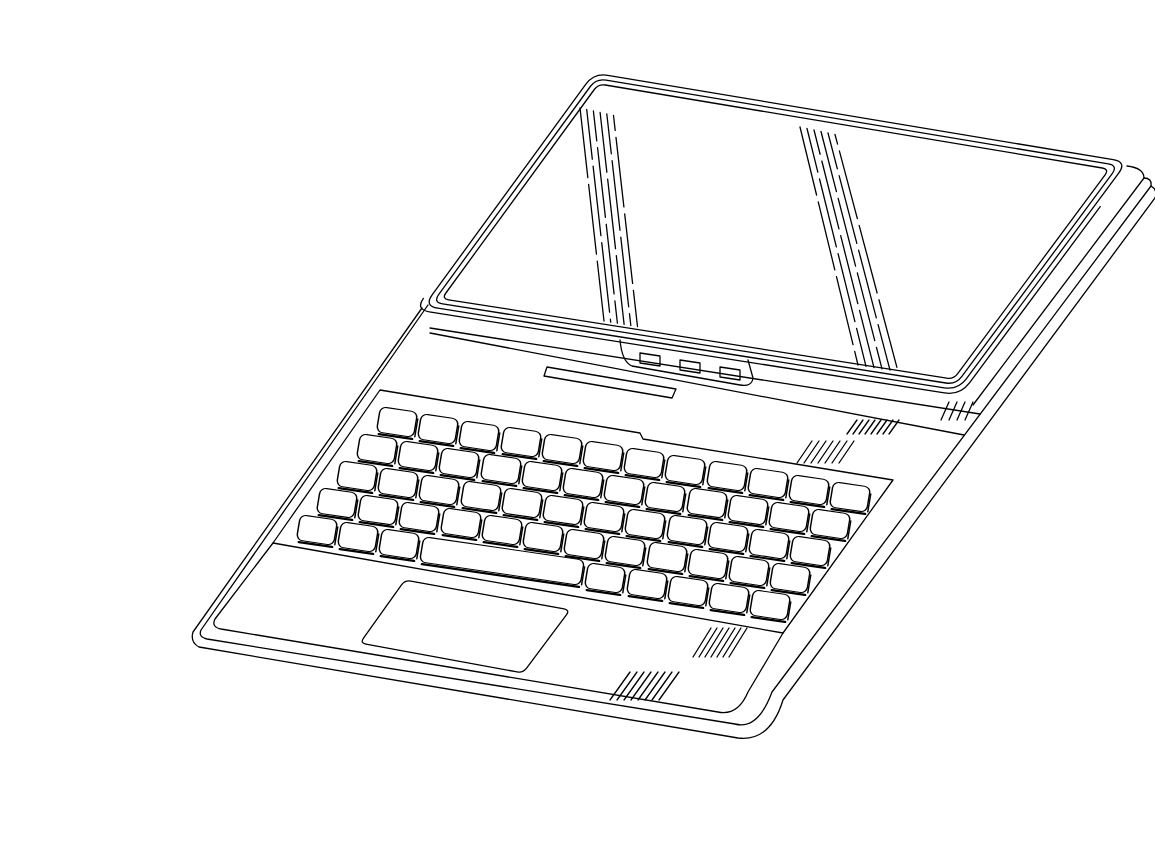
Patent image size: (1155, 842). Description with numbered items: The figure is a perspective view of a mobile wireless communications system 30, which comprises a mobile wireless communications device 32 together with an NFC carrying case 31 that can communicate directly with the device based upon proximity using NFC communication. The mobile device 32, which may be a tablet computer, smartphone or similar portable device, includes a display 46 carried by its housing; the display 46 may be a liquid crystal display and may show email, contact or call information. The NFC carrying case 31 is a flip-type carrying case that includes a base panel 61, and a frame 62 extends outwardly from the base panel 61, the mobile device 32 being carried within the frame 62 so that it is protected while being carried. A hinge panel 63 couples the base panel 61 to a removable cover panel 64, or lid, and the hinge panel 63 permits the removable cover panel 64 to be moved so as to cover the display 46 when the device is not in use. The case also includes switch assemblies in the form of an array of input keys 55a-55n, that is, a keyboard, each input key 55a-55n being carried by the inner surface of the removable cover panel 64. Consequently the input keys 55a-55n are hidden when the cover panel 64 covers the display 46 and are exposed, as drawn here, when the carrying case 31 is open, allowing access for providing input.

The mobile wireless communications system 30 is at (488, 66).
The NFC carrying case 31 is at (396, 344).
The mobile wireless communications device 32 is at (686, 82).
The display 46 is at (547, 200).
The input key 55a is at (397, 421).
The input key 55n is at (773, 603).
The base panel 61 is at (1043, 340).
The frame 62 is at (1047, 283).
The hinge panel 63 is at (950, 463).
The removable cover panel 64 is at (195, 633).